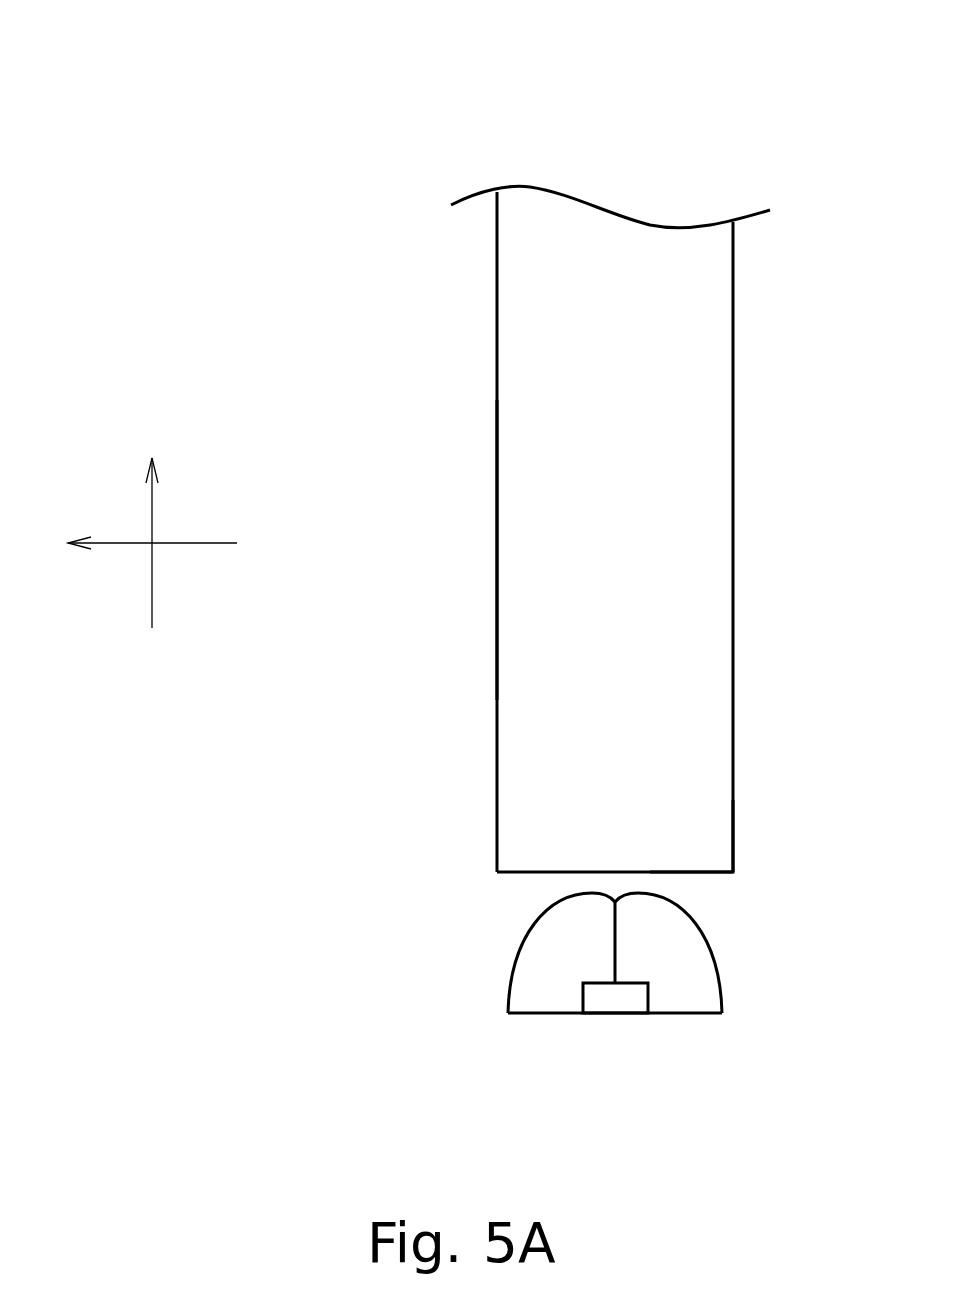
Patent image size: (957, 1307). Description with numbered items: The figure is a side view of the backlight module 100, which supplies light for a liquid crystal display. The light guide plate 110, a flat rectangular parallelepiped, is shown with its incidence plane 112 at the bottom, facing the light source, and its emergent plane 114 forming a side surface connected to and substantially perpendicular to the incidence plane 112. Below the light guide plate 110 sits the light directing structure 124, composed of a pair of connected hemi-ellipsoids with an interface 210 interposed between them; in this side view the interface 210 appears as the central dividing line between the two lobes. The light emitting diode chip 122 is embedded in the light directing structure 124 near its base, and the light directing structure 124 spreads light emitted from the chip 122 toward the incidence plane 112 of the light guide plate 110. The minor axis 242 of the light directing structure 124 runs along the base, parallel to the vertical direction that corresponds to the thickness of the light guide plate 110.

The backlight module 100 is at (359, 53).
The light guide plate 110 is at (710, 387).
The emergent plane 114 is at (497, 573).
The incidence plane 112 is at (715, 870).
The light directing structure 124 is at (698, 947).
The interface 210 is at (615, 937).
The light emitting diode chip 122 is at (617, 1000).
The minor axis 242 is at (685, 1013).